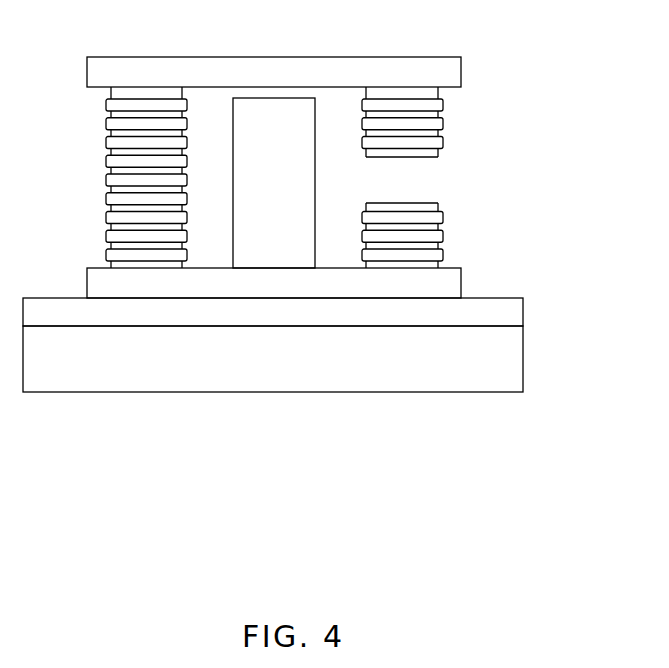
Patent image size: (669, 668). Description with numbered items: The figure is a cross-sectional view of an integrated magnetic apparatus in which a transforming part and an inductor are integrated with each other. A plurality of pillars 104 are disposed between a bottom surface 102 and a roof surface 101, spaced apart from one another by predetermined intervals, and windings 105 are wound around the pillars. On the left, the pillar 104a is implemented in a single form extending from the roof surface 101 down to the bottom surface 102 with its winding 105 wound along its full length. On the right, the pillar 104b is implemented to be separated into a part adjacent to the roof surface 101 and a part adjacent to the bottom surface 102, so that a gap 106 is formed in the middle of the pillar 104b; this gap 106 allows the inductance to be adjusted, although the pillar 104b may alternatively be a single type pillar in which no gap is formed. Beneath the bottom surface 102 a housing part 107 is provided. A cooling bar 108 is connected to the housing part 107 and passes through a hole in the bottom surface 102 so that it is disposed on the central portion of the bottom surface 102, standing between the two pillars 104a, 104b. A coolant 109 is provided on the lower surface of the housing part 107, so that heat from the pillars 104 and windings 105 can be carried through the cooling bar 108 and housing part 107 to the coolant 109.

The roof surface 101 is at (452, 70).
The bottom surface 102 is at (458, 283).
The pillar 104 is at (432, 135).
The pillar 104a is at (112, 93).
The pillar 104b is at (451, 165).
The winding 105 is at (442, 105).
The gap 106 is at (428, 179).
The housing part 107 is at (515, 312).
The cooling bar 108 is at (277, 112).
The coolant 109 is at (515, 357).